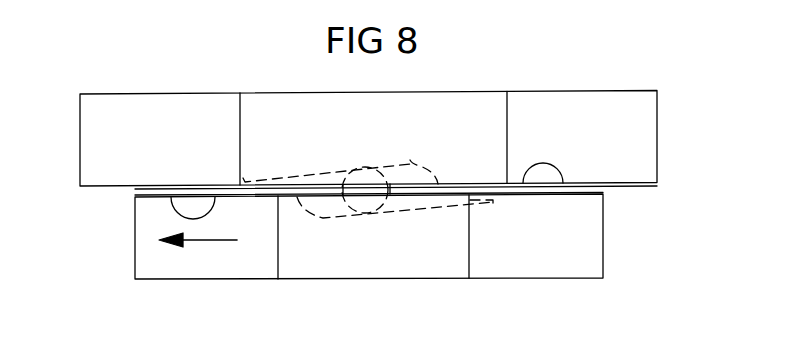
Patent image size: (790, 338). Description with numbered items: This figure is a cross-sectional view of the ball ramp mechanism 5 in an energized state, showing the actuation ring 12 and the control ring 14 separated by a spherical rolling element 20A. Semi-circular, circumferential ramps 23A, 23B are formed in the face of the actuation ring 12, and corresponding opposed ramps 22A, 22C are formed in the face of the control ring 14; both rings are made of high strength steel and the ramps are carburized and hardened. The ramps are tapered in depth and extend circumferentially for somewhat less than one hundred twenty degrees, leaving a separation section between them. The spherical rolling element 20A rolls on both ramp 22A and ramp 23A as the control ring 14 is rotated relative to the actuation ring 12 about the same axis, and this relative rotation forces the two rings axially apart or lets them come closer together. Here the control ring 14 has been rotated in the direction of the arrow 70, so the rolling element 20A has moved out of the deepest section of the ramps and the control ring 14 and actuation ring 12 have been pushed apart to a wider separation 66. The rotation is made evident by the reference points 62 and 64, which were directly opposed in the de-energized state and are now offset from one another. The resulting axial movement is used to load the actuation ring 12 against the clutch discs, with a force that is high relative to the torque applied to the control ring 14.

The ball ramp mechanism 5 is at (640, 71).
The actuation ring 12 is at (642, 115).
The control ring 14 is at (593, 236).
The spherical rolling element 20A is at (360, 190).
The ramp 22A is at (314, 173).
The ramp 22C is at (553, 170).
The ramp 23A is at (408, 210).
The ramp 23B is at (176, 205).
The reference point 62 is at (413, 162).
The reference point 64 is at (297, 200).
The separation 66 is at (137, 190).
The arrow 70 is at (203, 242).